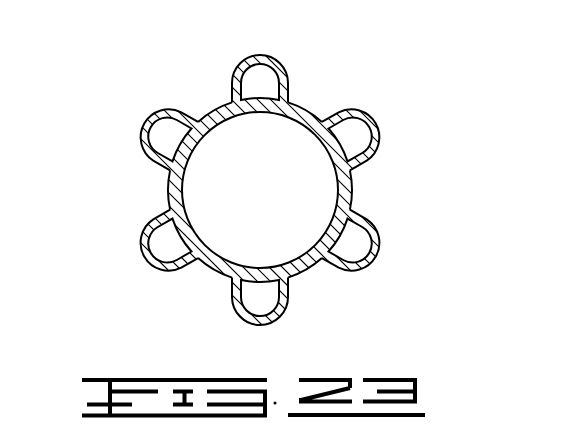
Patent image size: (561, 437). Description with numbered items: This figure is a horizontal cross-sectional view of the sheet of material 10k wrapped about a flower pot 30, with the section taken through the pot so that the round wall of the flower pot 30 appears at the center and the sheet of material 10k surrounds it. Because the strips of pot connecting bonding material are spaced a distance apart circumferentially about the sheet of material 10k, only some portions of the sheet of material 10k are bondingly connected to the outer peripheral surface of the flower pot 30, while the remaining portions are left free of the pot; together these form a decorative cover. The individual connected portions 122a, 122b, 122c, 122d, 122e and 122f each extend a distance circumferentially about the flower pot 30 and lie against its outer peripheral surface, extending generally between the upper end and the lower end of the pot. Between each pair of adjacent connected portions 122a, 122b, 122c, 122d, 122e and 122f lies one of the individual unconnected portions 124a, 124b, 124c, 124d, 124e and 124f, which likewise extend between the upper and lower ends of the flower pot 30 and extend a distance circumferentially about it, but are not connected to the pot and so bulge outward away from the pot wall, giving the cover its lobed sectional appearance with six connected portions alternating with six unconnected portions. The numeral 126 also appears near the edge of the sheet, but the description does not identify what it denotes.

The sheet of material 10k is at (247, 51).
The flower pot 30 is at (296, 117).
The connected portion 122a is at (310, 102).
The connected portion 122b is at (357, 190).
The connected portion 122c is at (307, 273).
The connected portion 122d is at (215, 277).
The connected portion 122e is at (163, 190).
The connected portion 122f is at (215, 108).
The unconnected portion 124a is at (370, 118).
The unconnected portion 124b is at (378, 257).
The unconnected portion 124c is at (272, 328).
The unconnected portion 124d is at (145, 255).
The unconnected portion 124e is at (148, 122).
The unconnected portion 124f is at (272, 57).
The adjacent figure element 126 is at (560, 430).